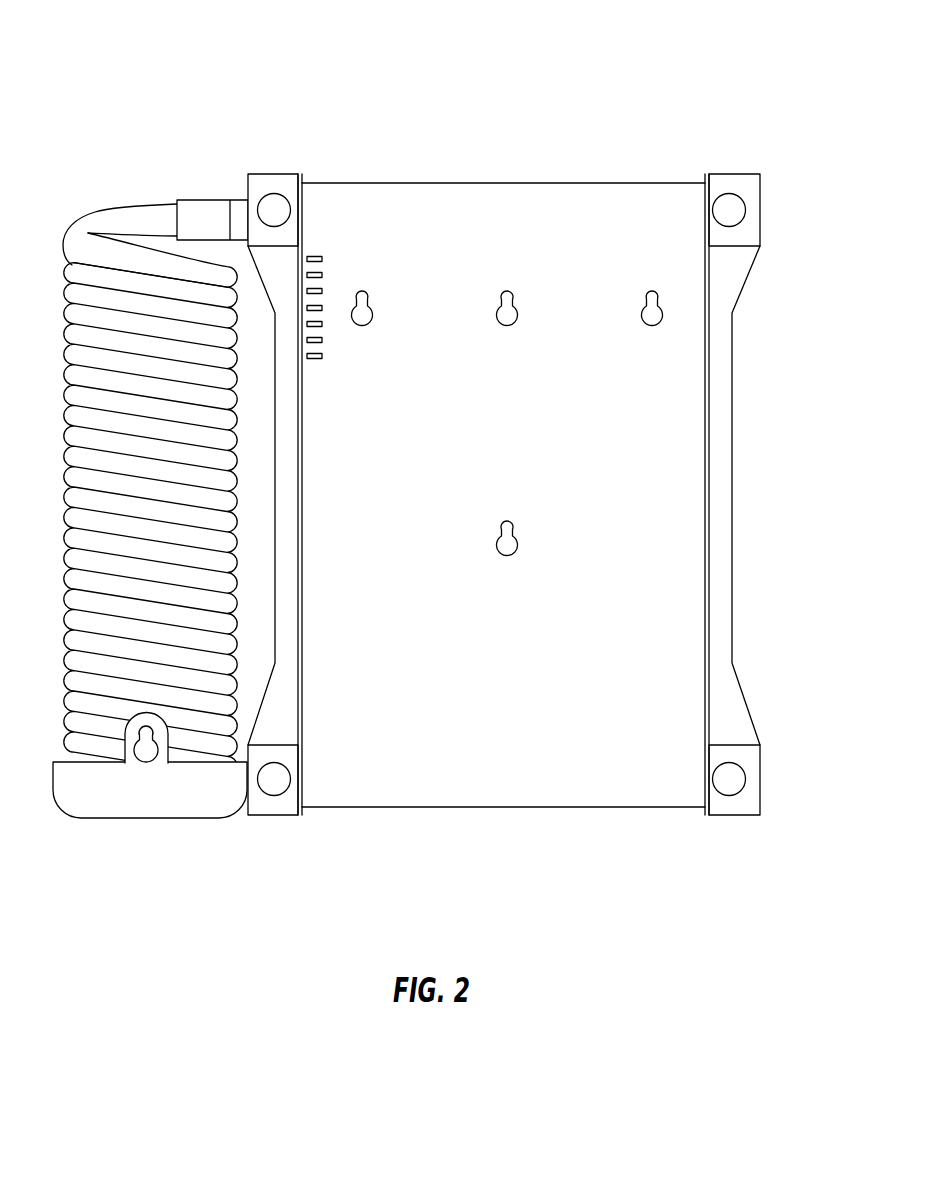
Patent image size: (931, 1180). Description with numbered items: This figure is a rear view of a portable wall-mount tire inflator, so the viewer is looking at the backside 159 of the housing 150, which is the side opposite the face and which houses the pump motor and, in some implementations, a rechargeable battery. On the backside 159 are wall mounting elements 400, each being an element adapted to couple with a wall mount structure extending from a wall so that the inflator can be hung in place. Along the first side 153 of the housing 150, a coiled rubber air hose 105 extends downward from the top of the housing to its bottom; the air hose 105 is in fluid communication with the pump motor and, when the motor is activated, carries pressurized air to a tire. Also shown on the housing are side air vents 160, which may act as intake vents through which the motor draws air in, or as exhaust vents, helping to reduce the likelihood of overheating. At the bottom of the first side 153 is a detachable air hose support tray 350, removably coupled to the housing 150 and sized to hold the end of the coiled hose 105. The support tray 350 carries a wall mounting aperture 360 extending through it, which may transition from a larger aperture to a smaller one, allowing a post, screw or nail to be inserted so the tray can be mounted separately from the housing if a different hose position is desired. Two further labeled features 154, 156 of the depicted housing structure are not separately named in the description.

The air hose 105 is at (80, 235).
The housing 150 is at (503, 447).
The first side 153 is at (272, 345).
The right side bracket flange 154 is at (732, 422).
The top edge of mounting plate 156 is at (574, 183).
The backside 159 is at (638, 755).
The side air vents 160 is at (316, 256).
The detachable air hose support tray 350 is at (192, 805).
The wall mounting aperture 360 is at (140, 763).
The wall mounting element 400 is at (653, 291).